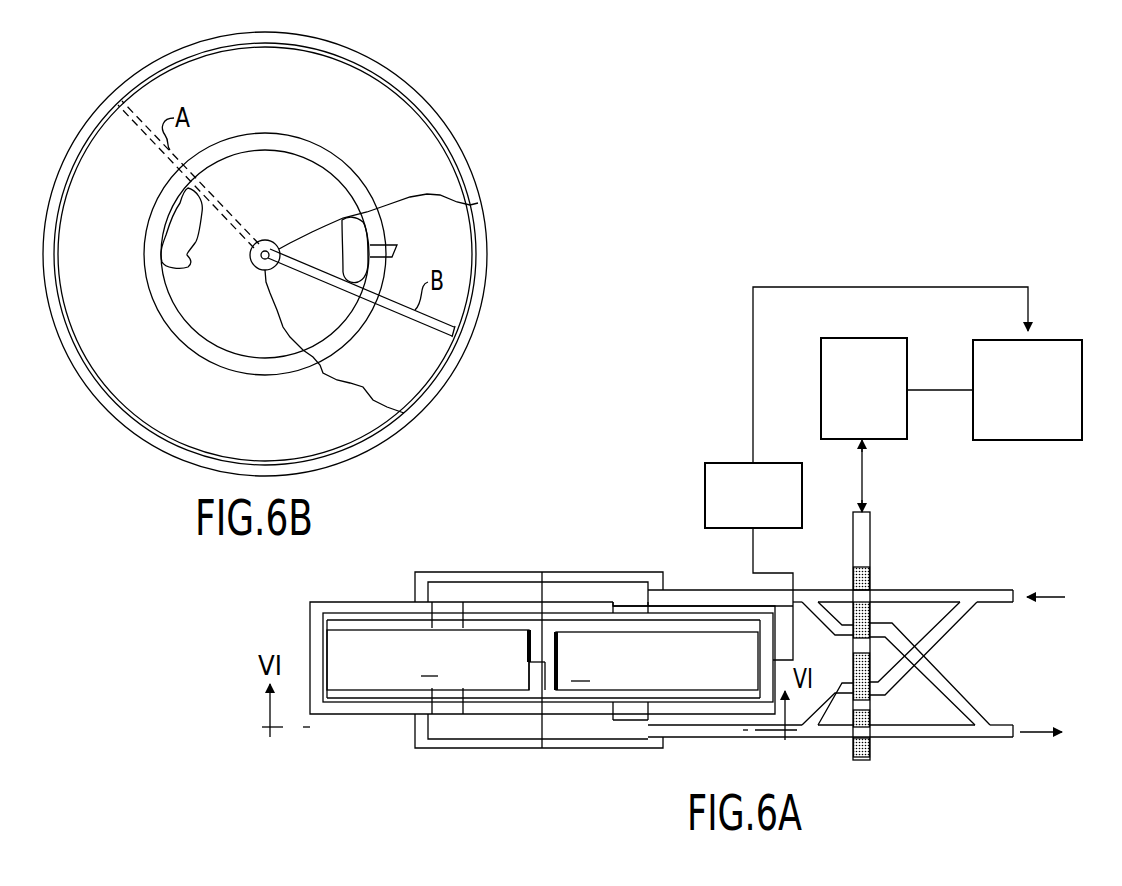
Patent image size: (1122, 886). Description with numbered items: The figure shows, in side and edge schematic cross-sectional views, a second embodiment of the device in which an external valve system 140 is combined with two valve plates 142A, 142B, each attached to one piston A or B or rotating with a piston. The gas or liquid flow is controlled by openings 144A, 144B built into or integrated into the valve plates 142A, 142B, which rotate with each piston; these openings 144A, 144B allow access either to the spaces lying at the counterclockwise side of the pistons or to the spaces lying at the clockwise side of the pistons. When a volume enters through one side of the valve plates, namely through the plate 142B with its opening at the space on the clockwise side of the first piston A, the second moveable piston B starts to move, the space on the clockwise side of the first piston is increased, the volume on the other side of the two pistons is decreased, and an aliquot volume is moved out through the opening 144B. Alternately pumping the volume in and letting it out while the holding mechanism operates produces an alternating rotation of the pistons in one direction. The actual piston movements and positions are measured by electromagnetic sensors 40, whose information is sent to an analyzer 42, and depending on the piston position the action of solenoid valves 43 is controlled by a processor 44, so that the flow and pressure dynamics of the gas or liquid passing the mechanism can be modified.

In FIG. 6A, the sensors 40 is at (750, 665).
In FIG. 6A, the analyzer 42 is at (705, 500).
In FIG. 6A, the solenoid valves 43 is at (908, 346).
In FIG. 6A, the processor 44 is at (1050, 441).
In FIG. 6A, the external valve system 140 is at (877, 765).
In FIG. 6A, the valve plate 142A is at (682, 702).
In FIG. 6A, the valve plate 142B is at (625, 628).
In FIG. 6B, the opening 144A is at (193, 254).
In FIG. 6A, the opening 144A is at (447, 626).
In FIG. 6B, the opening 144B is at (333, 240).
In FIG. 6A, the opening 144B is at (613, 690).